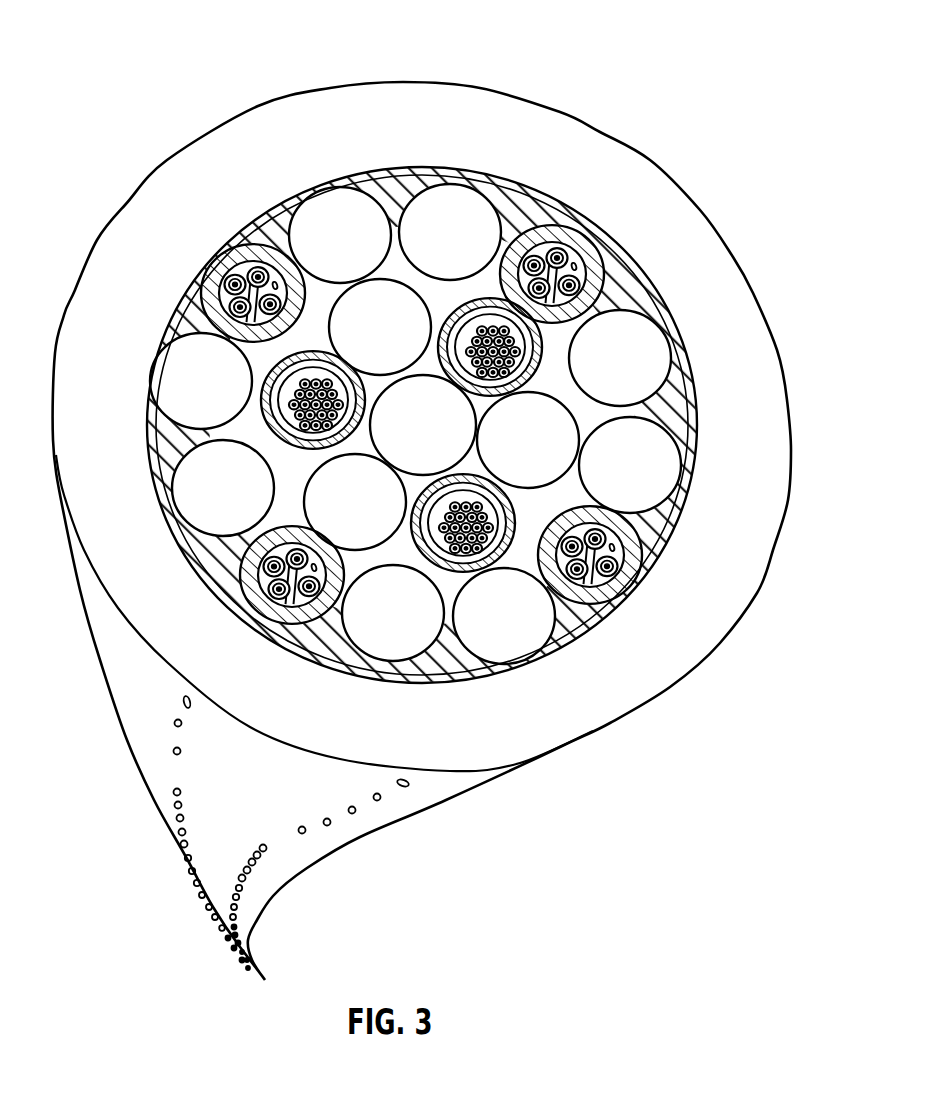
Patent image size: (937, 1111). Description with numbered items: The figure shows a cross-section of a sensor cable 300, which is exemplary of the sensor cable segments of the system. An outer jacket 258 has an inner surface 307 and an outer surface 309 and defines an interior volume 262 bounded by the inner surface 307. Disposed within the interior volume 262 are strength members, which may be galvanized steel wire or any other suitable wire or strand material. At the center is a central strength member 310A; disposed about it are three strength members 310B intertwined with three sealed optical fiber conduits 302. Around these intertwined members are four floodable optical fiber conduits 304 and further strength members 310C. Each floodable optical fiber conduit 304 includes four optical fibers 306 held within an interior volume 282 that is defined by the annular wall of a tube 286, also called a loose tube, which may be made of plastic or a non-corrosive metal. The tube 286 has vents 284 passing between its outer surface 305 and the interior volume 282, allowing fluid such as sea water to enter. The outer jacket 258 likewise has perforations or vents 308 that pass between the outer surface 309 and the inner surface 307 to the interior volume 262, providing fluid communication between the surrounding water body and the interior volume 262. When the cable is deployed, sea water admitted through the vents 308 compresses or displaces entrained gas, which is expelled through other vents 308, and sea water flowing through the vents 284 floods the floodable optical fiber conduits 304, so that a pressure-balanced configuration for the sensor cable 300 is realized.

The sensor cable 300 is at (116, 44).
The outer jacket 258 is at (410, 81).
The interior volume 262 is at (160, 477).
The interior volume 282 is at (243, 268).
The vents 284 is at (222, 272).
The tube 286 is at (212, 277).
The sealed optical fiber conduits 302 is at (600, 290).
The floodable optical fiber conduits 304 is at (265, 232).
The outer surface 305 is at (275, 341).
The optical fibers 306 is at (273, 617).
The inner surface 307 is at (690, 412).
The vents 308 is at (184, 702).
The outer surface 309 is at (463, 780).
The central strength member 310A is at (394, 440).
The strength members 310B is at (351, 342).
The strength members 310C is at (311, 250).